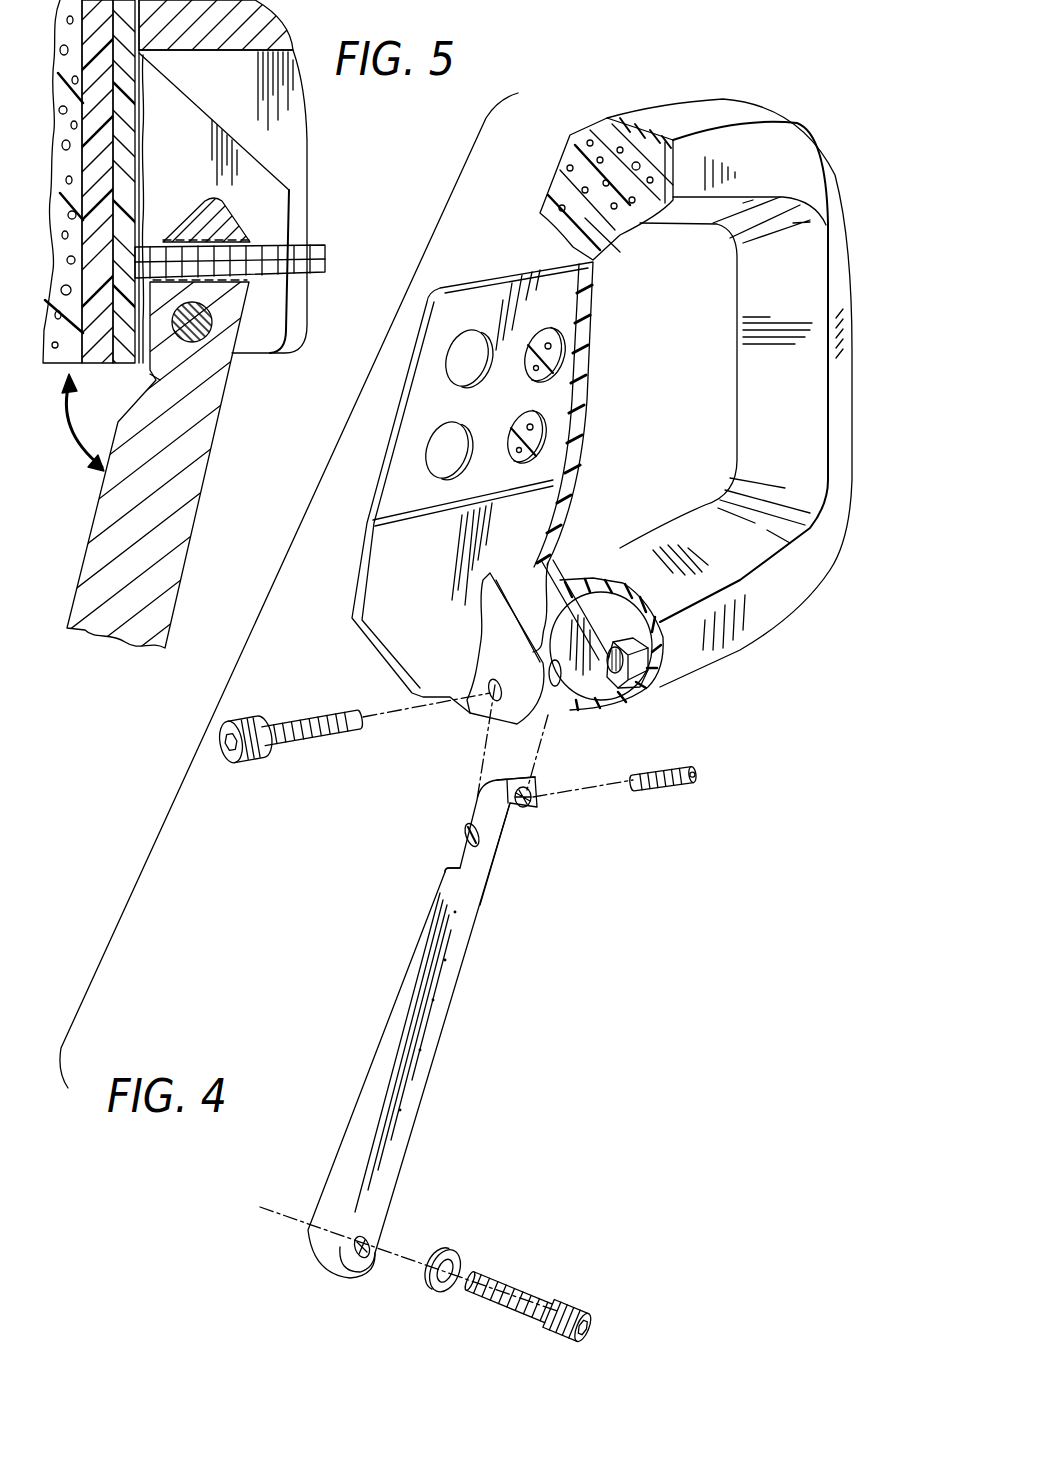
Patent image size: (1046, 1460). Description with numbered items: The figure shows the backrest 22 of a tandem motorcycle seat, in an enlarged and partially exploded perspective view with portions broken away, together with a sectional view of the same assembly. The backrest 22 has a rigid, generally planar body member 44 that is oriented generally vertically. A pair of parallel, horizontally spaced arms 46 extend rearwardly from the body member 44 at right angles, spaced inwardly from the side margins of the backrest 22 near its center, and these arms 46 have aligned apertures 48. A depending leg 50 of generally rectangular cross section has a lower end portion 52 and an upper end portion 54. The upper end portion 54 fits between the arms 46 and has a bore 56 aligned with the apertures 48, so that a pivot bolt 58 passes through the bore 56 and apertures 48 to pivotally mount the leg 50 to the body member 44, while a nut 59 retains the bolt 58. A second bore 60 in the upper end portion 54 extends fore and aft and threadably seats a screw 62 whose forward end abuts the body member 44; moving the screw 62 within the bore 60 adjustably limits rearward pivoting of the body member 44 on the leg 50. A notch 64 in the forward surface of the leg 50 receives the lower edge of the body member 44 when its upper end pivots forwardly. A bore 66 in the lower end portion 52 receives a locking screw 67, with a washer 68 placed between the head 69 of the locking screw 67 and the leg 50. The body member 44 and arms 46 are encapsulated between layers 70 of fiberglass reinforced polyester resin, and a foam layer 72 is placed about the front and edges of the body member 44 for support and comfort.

In FIG. 5, the backrest 22 is at (303, 55).
In FIG. 5, the body member 44 is at (137, 110).
In FIG. 4, the body member 44 is at (478, 290).
In FIG. 5, the arms 46 is at (253, 178).
In FIG. 4, the arms 46 is at (545, 722).
In FIG. 4, the apertures 48 is at (570, 600).
In FIG. 5, the depending leg 50 is at (205, 533).
In FIG. 4, the depending leg 50 is at (447, 1056).
In FIG. 4, the lower end portion 52 is at (387, 1180).
In FIG. 5, the upper end portion 54 is at (219, 418).
In FIG. 4, the upper end portion 54 is at (480, 930).
In FIG. 4, the bore 56 is at (455, 838).
In FIG. 5, the pivot bolt 58 is at (197, 323).
In FIG. 4, the pivot bolt 58 is at (290, 750).
In FIG. 4, the nut 59 is at (650, 682).
In FIG. 4, the second bore 60 is at (530, 812).
In FIG. 5, the screw 62 is at (300, 257).
In FIG. 4, the screw 62 is at (663, 790).
In FIG. 5, the notch 64 is at (158, 380).
In FIG. 4, the notch 64 is at (440, 872).
In FIG. 4, the bore 66 is at (372, 1260).
In FIG. 4, the locking screw 67 is at (527, 1297).
In FIG. 4, the washer 68 is at (450, 1255).
In FIG. 4, the head 69 is at (573, 1300).
In FIG. 5, the layers 70 is at (97, 163).
In FIG. 4, the layers 70 is at (540, 213).
In FIG. 5, the foam layer 72 is at (77, 350).
In FIG. 4, the foam layer 72 is at (570, 137).